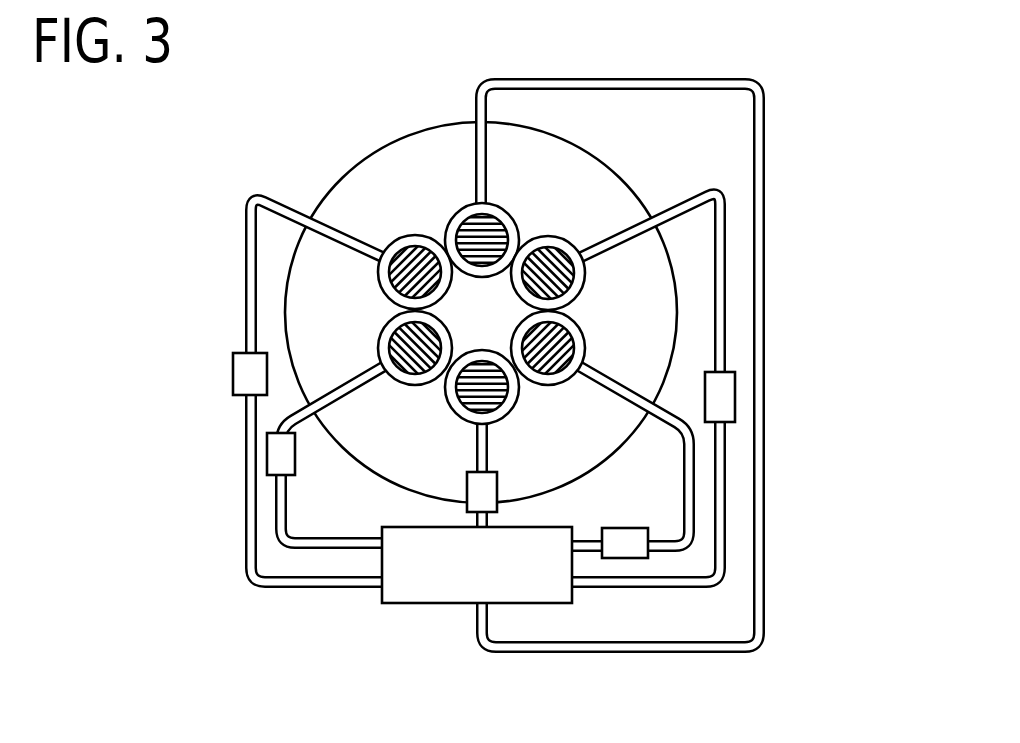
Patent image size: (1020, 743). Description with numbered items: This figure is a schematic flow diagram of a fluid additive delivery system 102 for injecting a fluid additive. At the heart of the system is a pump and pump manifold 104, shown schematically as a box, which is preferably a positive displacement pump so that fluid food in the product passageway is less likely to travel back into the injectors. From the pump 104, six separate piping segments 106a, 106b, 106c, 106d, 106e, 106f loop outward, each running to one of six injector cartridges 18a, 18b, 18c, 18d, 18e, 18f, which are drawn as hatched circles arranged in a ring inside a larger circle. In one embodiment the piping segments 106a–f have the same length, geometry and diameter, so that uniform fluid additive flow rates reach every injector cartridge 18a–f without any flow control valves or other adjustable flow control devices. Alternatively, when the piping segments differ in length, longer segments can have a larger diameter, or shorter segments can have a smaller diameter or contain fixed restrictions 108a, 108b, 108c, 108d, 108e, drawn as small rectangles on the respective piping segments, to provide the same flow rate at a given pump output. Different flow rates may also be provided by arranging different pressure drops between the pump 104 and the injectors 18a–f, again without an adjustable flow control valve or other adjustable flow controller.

The fluid additive delivery system 102 is at (829, 121).
The pump and pump manifold 104 is at (415, 605).
The piping segment 106a is at (245, 270).
The piping segment 106b is at (290, 534).
The piping segment 106c is at (477, 460).
The piping segment 106d is at (690, 483).
The piping segment 106e is at (683, 590).
The piping segment 106f is at (760, 559).
The fixed restriction 108a is at (233, 374).
The fixed restriction 108b is at (268, 450).
The fixed restriction 108c is at (497, 490).
The fixed restriction 108d is at (622, 530).
The fixed restriction 108e is at (735, 392).
The injector cartridge 18a is at (412, 236).
The injector cartridge 18b is at (380, 340).
The injector cartridge 18c is at (516, 399).
The injector cartridge 18d is at (584, 338).
The injector cartridge 18e is at (585, 277).
The injector cartridge 18f is at (505, 211).